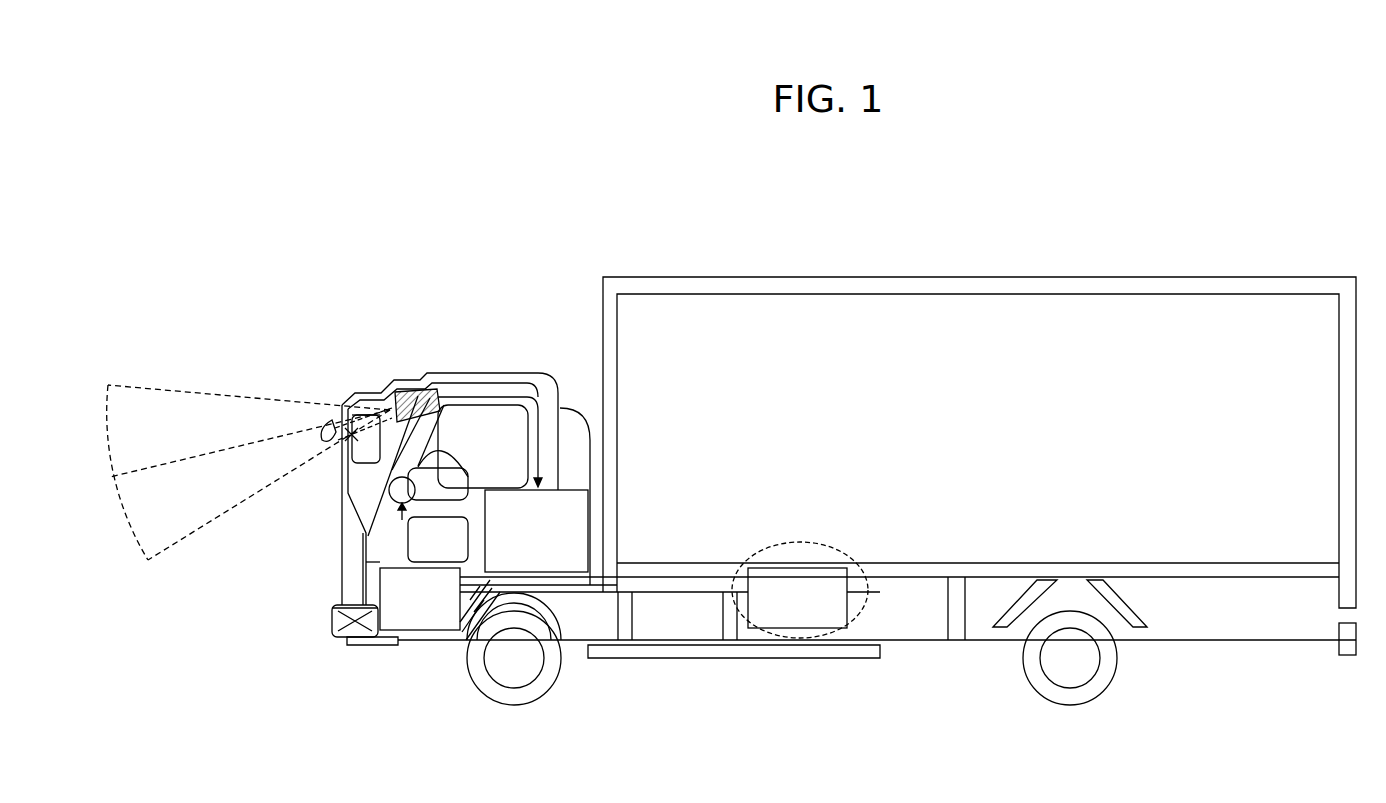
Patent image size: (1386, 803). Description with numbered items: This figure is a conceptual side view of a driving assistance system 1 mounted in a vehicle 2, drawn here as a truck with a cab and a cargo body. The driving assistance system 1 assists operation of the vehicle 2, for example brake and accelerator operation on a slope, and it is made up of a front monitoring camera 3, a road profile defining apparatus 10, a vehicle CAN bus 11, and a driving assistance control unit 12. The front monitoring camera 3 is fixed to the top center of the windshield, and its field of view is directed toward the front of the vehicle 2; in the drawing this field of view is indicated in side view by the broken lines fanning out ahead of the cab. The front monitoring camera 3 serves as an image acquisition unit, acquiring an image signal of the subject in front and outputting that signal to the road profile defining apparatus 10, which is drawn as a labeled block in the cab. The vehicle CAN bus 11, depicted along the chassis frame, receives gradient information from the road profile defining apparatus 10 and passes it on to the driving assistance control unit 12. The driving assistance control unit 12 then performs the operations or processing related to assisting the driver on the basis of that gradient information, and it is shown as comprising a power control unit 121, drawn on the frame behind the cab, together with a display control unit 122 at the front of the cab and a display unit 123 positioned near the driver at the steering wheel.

The driving assistance system 1 is at (318, 742).
The vehicle 2 is at (893, 283).
The front monitoring camera 3 is at (420, 388).
The road profile defining apparatus 10 is at (598, 528).
The vehicle CAN bus 11 is at (672, 592).
The driving assistance control unit 12 is at (330, 628).
The power control unit 121 is at (797, 633).
The display control unit 122 is at (393, 640).
The display unit 123 is at (372, 495).